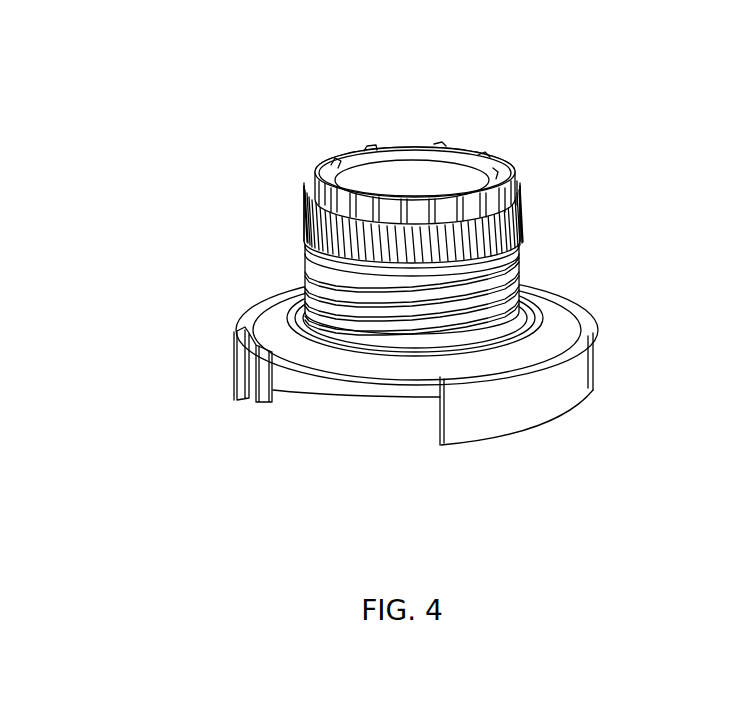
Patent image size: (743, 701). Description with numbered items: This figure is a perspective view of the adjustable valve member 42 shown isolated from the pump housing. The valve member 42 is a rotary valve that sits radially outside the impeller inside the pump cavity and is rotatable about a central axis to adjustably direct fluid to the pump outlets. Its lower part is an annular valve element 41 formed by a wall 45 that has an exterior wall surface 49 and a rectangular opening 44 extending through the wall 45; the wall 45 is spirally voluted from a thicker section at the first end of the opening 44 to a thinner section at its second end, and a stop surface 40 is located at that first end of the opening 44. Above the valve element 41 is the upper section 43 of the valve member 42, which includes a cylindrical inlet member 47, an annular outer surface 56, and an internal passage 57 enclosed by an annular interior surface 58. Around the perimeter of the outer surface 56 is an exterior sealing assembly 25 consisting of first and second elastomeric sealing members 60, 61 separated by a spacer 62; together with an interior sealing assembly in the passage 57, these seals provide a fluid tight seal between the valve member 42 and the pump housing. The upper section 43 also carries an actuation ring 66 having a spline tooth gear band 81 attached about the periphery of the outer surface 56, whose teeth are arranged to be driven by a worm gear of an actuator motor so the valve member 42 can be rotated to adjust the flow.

The exterior sealing assembly 25 is at (394, 262).
The stop surface 40 is at (243, 381).
The annular valve element 41 is at (583, 322).
The adjustable valve member 42 is at (432, 266).
The upper section 43 is at (394, 200).
The rectangular opening 44 is at (424, 366).
The wall 45 is at (483, 444).
The cylindrical inlet member 47 is at (452, 143).
The exterior wall surface 49 is at (575, 385).
The annular outer surface 56 is at (498, 323).
The internal passage 57 is at (433, 145).
The annular interior surface 58 is at (442, 168).
The first elastomeric sealing member 60 is at (352, 265).
The second elastomeric sealing member 61 is at (357, 316).
The spacer 62 is at (340, 302).
The actuation ring 66 is at (353, 263).
The spline tooth gear band 81 is at (519, 205).